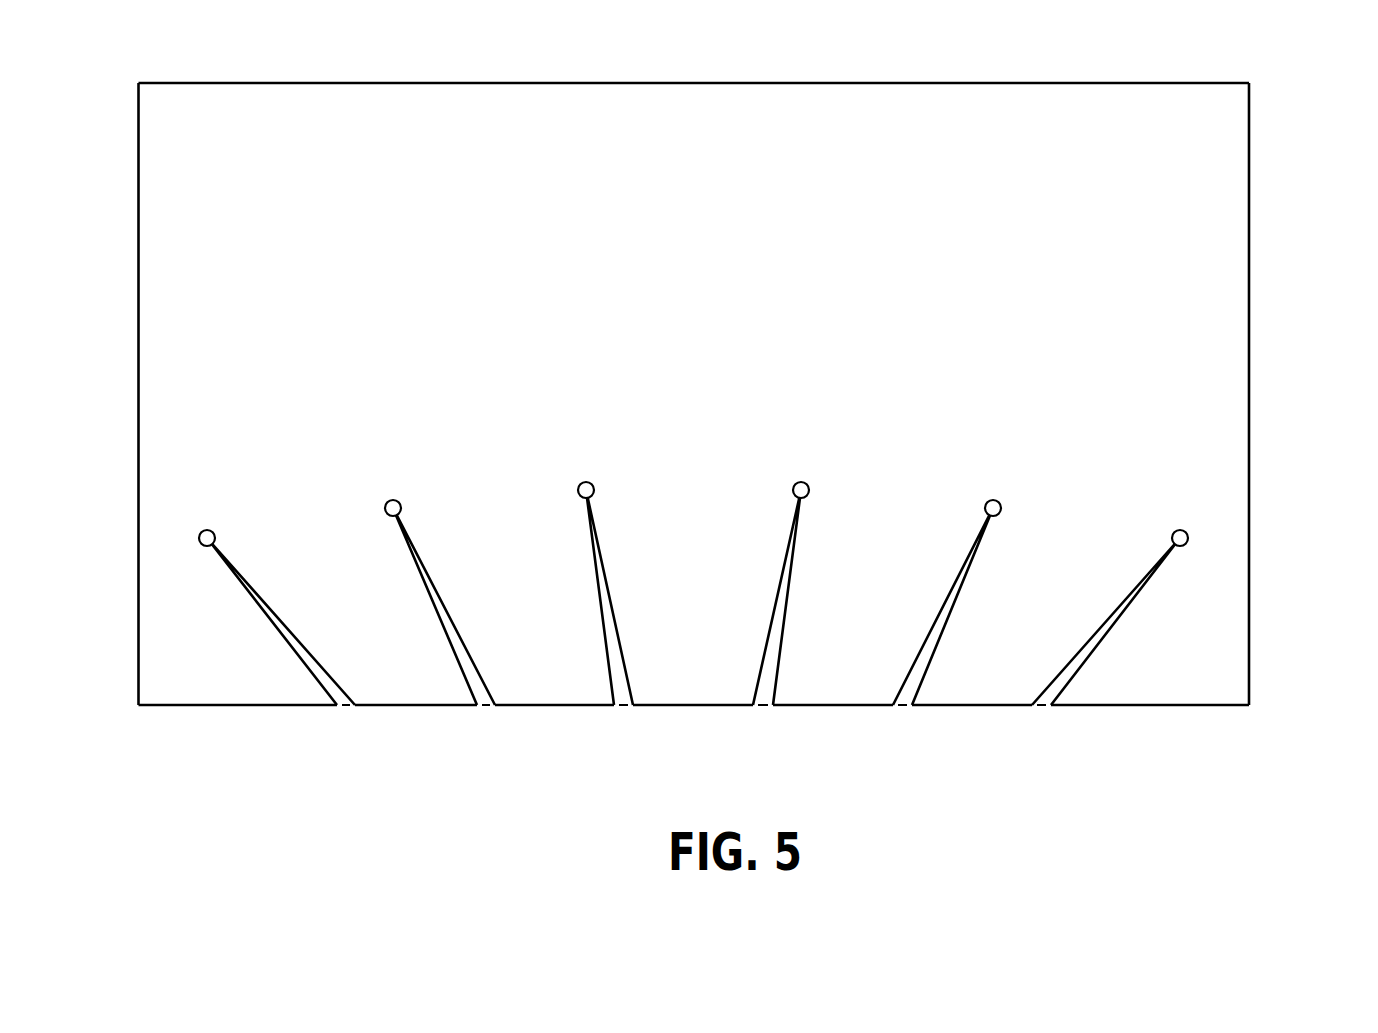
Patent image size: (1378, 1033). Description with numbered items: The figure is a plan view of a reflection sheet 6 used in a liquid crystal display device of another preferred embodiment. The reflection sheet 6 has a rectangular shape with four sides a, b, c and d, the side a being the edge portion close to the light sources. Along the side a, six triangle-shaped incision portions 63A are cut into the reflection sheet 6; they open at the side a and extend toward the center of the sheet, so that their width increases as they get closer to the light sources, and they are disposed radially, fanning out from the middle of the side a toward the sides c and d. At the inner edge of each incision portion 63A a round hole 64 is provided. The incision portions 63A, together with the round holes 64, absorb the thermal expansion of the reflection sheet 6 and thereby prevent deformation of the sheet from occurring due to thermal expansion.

The reflection sheet 6 is at (726, 390).
The incision portions 63A is at (316, 680).
The round holes 64 is at (208, 529).
The side a is at (1158, 706).
The side b is at (1010, 83).
The side c is at (1250, 553).
The side d is at (138, 272).